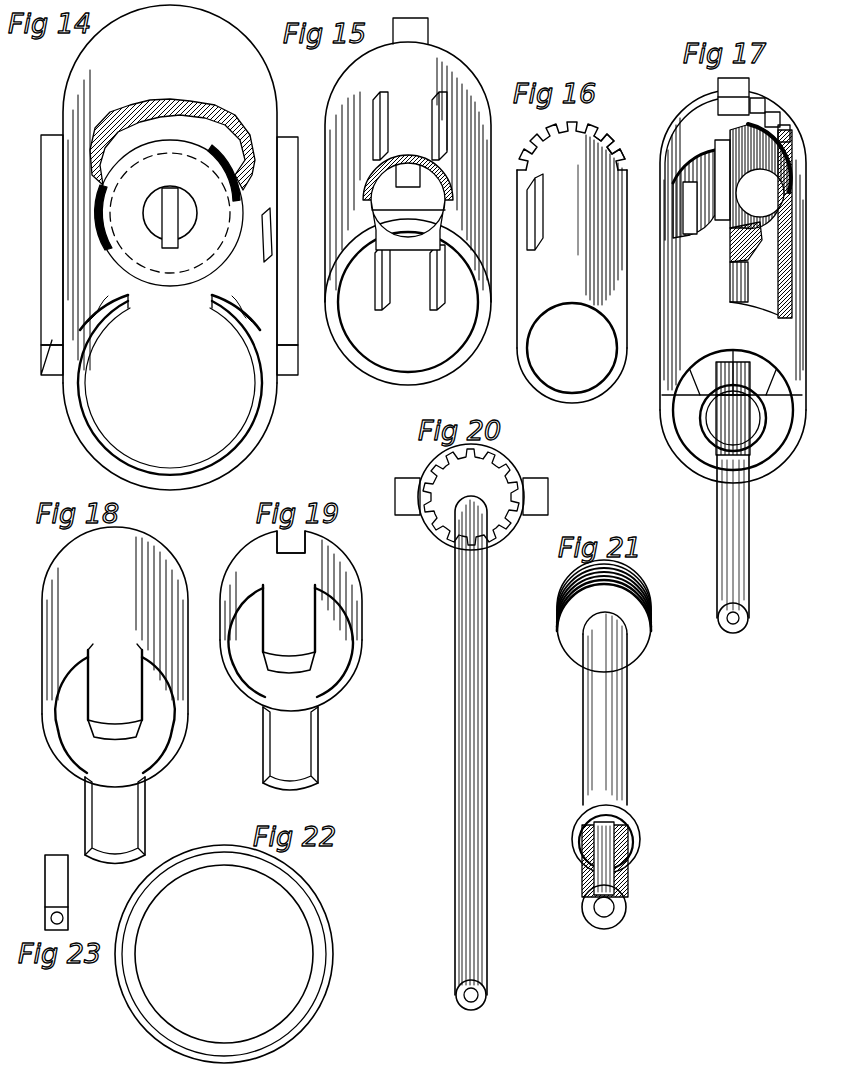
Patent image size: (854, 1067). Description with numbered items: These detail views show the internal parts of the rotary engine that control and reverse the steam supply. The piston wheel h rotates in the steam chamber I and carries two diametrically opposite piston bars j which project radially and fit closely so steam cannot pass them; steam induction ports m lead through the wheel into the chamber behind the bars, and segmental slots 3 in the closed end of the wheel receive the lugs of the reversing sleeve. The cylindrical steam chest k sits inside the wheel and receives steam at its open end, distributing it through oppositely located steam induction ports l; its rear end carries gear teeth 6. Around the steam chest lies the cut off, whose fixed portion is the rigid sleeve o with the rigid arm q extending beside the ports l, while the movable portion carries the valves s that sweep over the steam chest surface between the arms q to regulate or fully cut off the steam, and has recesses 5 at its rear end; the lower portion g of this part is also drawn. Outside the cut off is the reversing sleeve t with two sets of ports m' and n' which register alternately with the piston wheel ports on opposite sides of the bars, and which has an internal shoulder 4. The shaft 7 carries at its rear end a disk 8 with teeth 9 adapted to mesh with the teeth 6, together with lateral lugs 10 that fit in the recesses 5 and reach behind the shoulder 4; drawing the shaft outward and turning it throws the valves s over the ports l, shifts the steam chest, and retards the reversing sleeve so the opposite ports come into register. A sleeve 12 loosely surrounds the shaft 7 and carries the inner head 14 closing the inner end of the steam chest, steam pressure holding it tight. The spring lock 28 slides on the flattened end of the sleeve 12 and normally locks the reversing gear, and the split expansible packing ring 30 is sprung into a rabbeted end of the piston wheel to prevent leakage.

In FIG. 14, the piston wheel h is at (172, 177).
In FIG. 15, the piston wheel h is at (428, 30).
In FIG. 14, the segmental slots 3 is at (96, 222).
In FIG. 14, the steam induction ports m is at (293, 235).
In FIG. 14, the piston bars j is at (56, 345).
In FIG. 15, the reversing sleeve t is at (354, 195).
In FIG. 15, the ports of reversing sleeve n' is at (402, 216).
In FIG. 15, the ports of reversing sleeve m' is at (399, 217).
In FIG. 15, the internal shoulder 4 is at (408, 202).
In FIG. 16, the gear teeth 6 is at (592, 121).
In FIG. 17, the gear teeth 6 is at (792, 136).
In FIG. 16, the steam induction ports l is at (543, 215).
In FIG. 16, the steam chest k is at (572, 262).
In FIG. 17, the steam chest k is at (794, 152).
In FIG. 17, the lateral lugs 10 is at (733, 96).
In FIG. 20, the lateral lugs 10 is at (546, 503).
In FIG. 17, the disk 8 is at (768, 104).
In FIG. 20, the disk 8 is at (505, 462).
In FIG. 17, the teeth 9 is at (782, 122).
In FIG. 20, the teeth 9 is at (432, 545).
In FIG. 17, the steam chamber I is at (694, 153).
In FIG. 19, the steam chamber I is at (240, 585).
In FIG. 17, the cut off valves s is at (720, 180).
In FIG. 19, the cut off valves s is at (290, 687).
In FIG. 17, the inner head 14 is at (769, 168).
In FIG. 21, the inner head 14 is at (619, 616).
In FIG. 17, the rigid arm q is at (650, 286).
In FIG. 18, the rigid arm q is at (115, 692).
In FIG. 17, the rigid sleeve o is at (732, 356).
In FIG. 18, the rigid sleeve o is at (62, 558).
In FIG. 17, the sleeve 12 is at (712, 445).
In FIG. 21, the sleeve 12 is at (617, 770).
In FIG. 18, the stem g is at (115, 820).
In FIG. 19, the recesses 5 is at (291, 542).
In FIG. 20, the shaft 7 is at (481, 753).
In FIG. 22, the packing rings 30 is at (256, 852).
In FIG. 23, the spring lock 28 is at (56, 892).